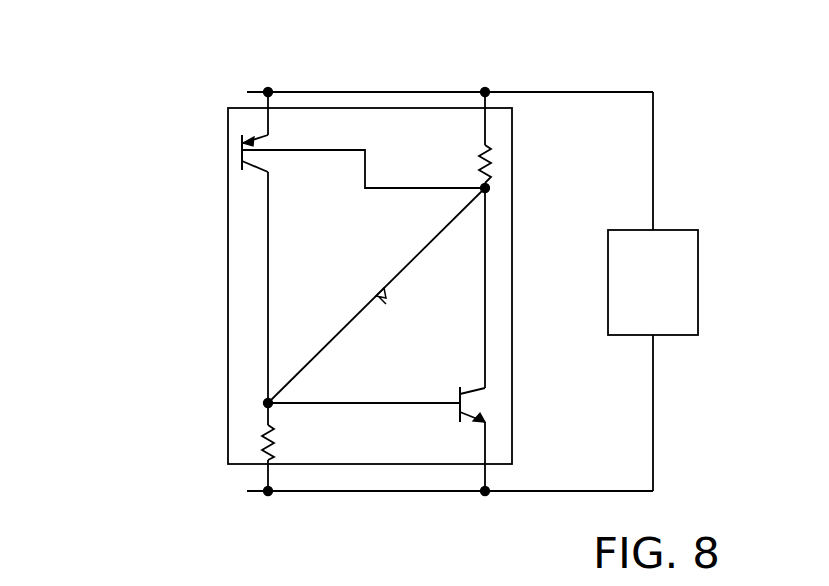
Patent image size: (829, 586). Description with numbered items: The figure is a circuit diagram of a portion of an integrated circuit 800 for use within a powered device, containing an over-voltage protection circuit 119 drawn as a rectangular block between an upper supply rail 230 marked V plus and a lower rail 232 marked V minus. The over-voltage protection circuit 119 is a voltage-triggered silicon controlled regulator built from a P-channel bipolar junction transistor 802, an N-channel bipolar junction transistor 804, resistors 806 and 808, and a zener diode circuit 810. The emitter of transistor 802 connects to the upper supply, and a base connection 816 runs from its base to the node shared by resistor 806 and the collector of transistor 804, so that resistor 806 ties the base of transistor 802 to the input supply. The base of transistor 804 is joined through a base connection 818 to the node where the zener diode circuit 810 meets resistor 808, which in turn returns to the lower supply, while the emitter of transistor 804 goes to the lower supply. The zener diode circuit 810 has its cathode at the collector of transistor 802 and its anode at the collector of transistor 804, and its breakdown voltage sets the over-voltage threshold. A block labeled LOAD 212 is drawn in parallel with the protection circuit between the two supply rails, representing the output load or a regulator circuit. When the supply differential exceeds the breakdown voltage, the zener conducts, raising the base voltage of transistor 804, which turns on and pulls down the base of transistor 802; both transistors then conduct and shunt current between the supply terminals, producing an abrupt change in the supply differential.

The integrated circuit 800 is at (136, 98).
The P-channel bipolar junction transistor 802 is at (222, 153).
The N-channel bipolar junction transistor 804 is at (478, 395).
The resistor 806 is at (494, 153).
The resistor 808 is at (266, 431).
The zener diode circuit 810 is at (378, 290).
The base connection line 816 is at (365, 150).
The base connection line 818 is at (393, 403).
The over-voltage protection circuit 119 is at (414, 108).
The load 212 is at (700, 288).
The positive supply rail V+ 230 is at (380, 92).
The output load 232 is at (380, 492).